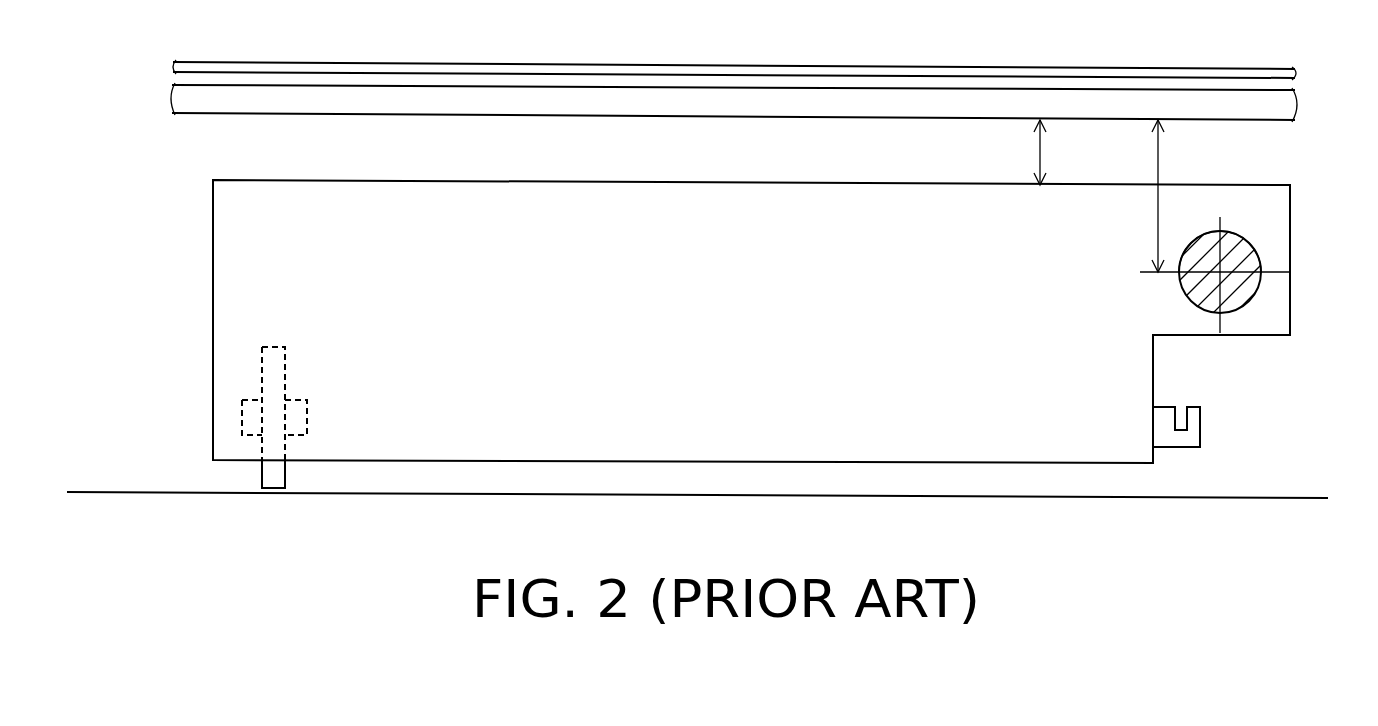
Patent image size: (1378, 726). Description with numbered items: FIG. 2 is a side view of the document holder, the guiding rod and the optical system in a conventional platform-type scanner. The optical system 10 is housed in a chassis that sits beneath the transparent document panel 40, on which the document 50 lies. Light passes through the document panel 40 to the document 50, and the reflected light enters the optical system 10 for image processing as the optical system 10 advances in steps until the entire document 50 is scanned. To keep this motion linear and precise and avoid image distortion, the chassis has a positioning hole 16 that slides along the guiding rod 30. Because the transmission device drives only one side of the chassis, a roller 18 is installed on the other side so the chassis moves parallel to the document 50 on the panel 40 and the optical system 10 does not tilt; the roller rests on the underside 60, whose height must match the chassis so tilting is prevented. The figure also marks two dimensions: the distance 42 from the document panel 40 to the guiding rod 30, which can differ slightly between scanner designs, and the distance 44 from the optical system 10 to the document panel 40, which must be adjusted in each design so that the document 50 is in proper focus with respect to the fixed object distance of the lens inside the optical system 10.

The optical system 10 is at (163, 242).
The positioning hole 16 is at (1257, 243).
The roller 18 is at (270, 373).
The guiding rod 30 is at (1248, 297).
The document panel 40 is at (1297, 120).
The distance from the document panel to the guiding rod 42 is at (1160, 163).
The distance from the optical system to the document panel 44 is at (1043, 157).
The document 50 is at (1297, 70).
The underside 60 is at (112, 491).